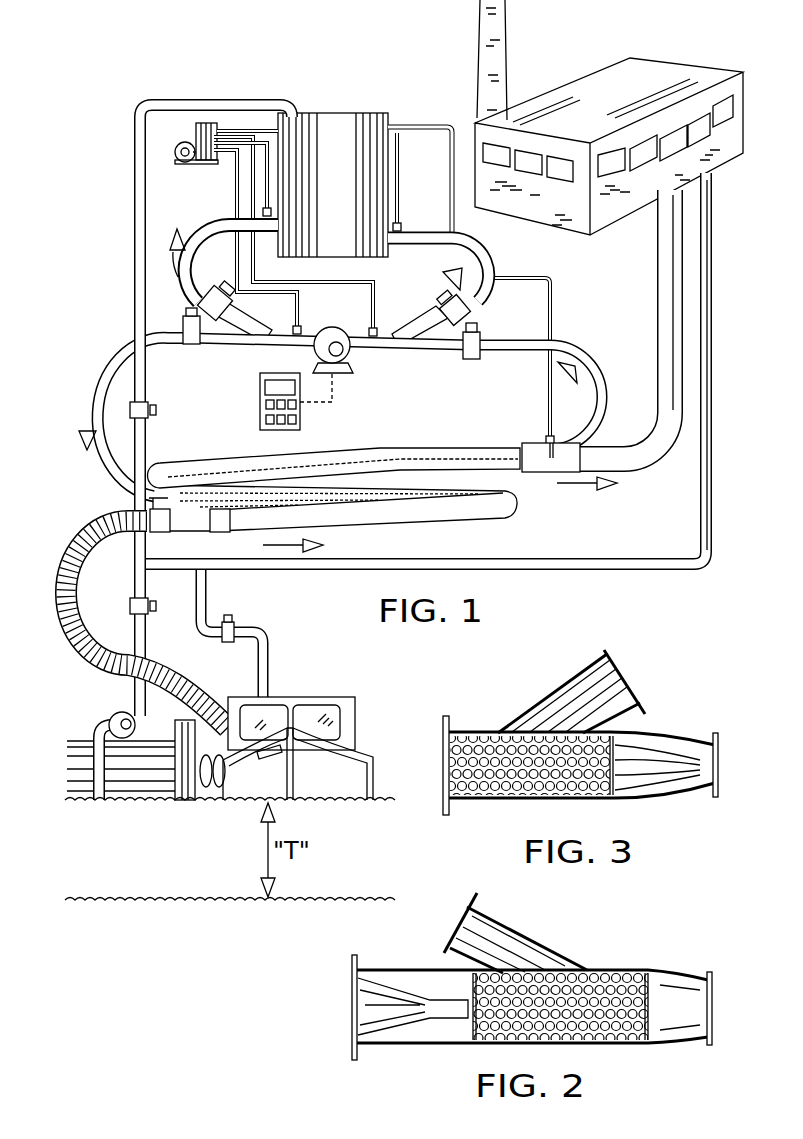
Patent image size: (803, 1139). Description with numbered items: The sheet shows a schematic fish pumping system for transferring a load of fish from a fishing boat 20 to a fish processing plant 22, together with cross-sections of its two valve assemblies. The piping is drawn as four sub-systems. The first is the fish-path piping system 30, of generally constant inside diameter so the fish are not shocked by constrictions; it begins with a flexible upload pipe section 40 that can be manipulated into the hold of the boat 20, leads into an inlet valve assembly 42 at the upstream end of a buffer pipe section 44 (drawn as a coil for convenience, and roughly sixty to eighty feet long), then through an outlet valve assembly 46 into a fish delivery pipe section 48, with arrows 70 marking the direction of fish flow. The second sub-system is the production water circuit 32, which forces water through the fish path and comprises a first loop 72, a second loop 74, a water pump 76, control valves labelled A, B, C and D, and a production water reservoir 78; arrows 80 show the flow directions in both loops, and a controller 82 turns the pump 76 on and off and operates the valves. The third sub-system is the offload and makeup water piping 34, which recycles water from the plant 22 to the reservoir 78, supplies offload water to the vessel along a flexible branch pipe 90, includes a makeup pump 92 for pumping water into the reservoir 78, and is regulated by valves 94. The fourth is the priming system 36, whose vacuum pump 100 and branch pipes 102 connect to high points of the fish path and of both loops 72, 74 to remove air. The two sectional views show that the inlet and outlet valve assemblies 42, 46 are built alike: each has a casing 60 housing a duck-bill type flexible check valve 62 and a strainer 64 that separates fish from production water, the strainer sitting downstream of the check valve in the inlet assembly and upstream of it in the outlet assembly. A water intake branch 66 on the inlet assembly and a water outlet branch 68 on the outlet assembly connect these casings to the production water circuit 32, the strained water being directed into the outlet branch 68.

In FIG. 1, the fishing boat 20 is at (338, 697).
In FIG. 1, the fish processing plant 22 is at (555, 88).
In FIG. 1, the fish-path piping system 30 is at (672, 447).
In FIG. 1, the production water circuit 32 is at (118, 362).
In FIG. 1, the offload and makeup water piping 34 is at (133, 192).
In FIG. 1, the priming system 36 is at (230, 180).
In FIG. 1, the flexible upload pipe section 40 is at (197, 672).
In FIG. 1, the inlet valve assembly 42 is at (140, 505).
In FIG. 2, the inlet valve assembly 42 is at (617, 933).
In FIG. 1, the buffer pipe section 44 is at (422, 443).
In FIG. 1, the outlet valve assembly 46 is at (528, 440).
In FIG. 3, the outlet valve assembly 46 is at (527, 695).
In FIG. 1, the fish delivery pipe section 48 is at (655, 342).
In FIG. 3, the casing 60 is at (668, 800).
In FIG. 2, the casing 60 is at (613, 1043).
In FIG. 3, the check valve 62 is at (660, 753).
In FIG. 2, the check valve 62 is at (420, 966).
In FIG. 3, the strainer 64 is at (495, 803).
In FIG. 2, the strainer 64 is at (602, 963).
In FIG. 2, the water intake branch 66 is at (528, 935).
In FIG. 3, the water outlet branch 68 is at (590, 680).
In FIG. 1, the arrows 70 is at (578, 483).
In FIG. 1, the first loop 72 is at (587, 348).
In FIG. 1, the second loop 74 is at (482, 252).
In FIG. 1, the water pump 76 is at (347, 372).
In FIG. 1, the production water reservoir 78 is at (330, 110).
In FIG. 1, the arrows 80 is at (170, 262).
In FIG. 1, the controller 82 is at (307, 418).
In FIG. 1, the flexible branch pipe 90 is at (270, 675).
In FIG. 1, the makeup pump 92 is at (117, 712).
In FIG. 1, the valves 94 is at (158, 410).
In FIG. 1, the vacuum pump 100 is at (180, 142).
In FIG. 1, the branch pipes 102 is at (398, 182).